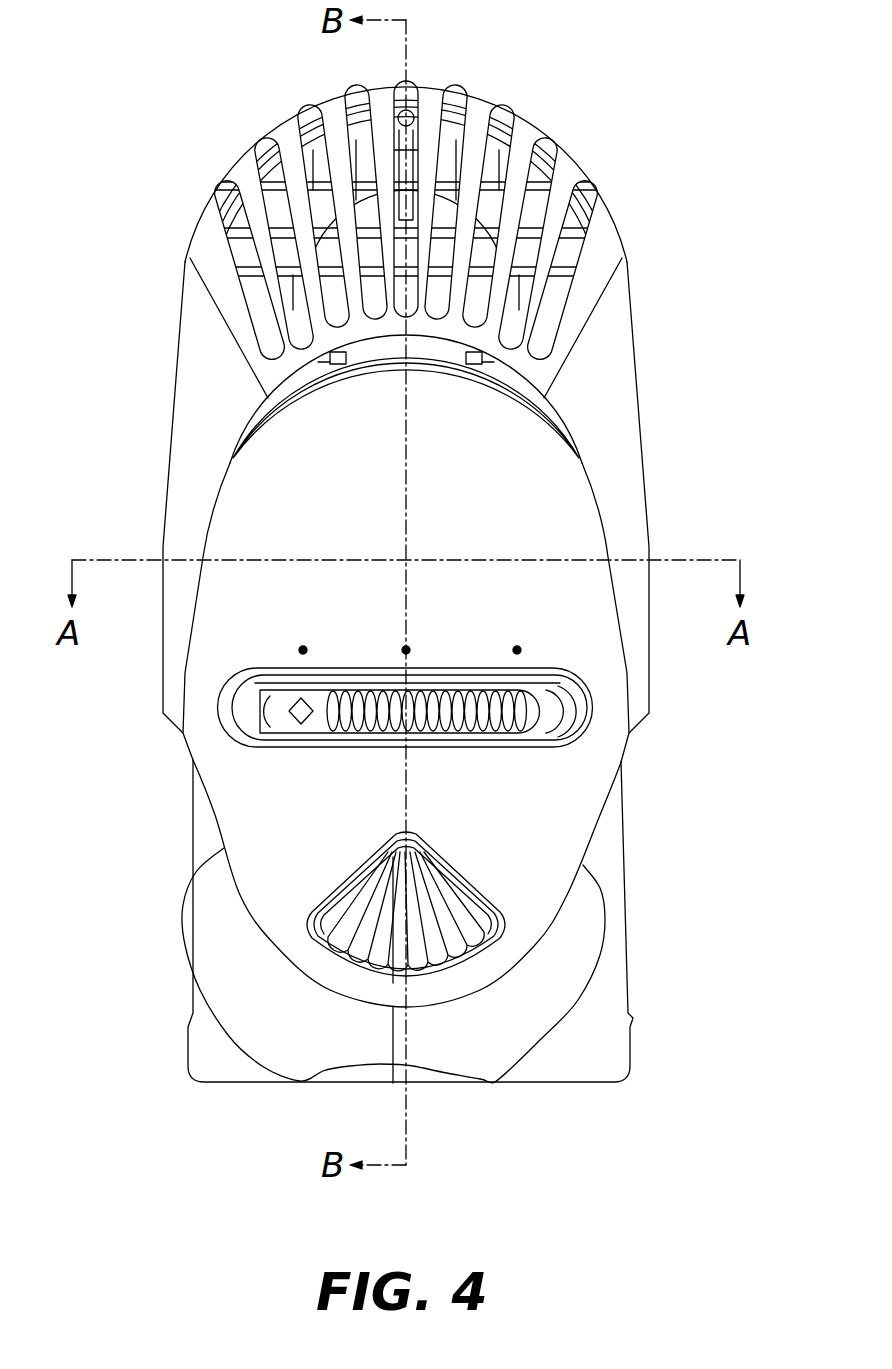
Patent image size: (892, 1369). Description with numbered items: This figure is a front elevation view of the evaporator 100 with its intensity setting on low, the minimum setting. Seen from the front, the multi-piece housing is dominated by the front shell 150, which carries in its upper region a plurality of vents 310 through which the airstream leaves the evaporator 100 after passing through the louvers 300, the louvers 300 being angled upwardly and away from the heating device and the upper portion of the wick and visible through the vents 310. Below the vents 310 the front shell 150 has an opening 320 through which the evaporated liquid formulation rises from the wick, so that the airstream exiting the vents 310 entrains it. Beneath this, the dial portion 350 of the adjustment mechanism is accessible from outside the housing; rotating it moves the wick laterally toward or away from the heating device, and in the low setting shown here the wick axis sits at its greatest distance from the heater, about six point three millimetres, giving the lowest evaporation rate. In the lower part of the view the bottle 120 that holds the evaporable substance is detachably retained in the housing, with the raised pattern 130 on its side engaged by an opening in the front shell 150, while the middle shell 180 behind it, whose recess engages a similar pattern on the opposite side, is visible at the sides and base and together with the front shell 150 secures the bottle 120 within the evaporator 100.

The evaporator 100 is at (689, 104).
The front shell 150 is at (636, 322).
The louvers 300 is at (272, 210).
The vents 310 is at (543, 152).
The opening 320 is at (335, 368).
The dial portion 350 is at (530, 700).
The raised pattern 130 is at (500, 912).
The middle shell 180 is at (628, 1045).
The bottle 120 is at (255, 1050).